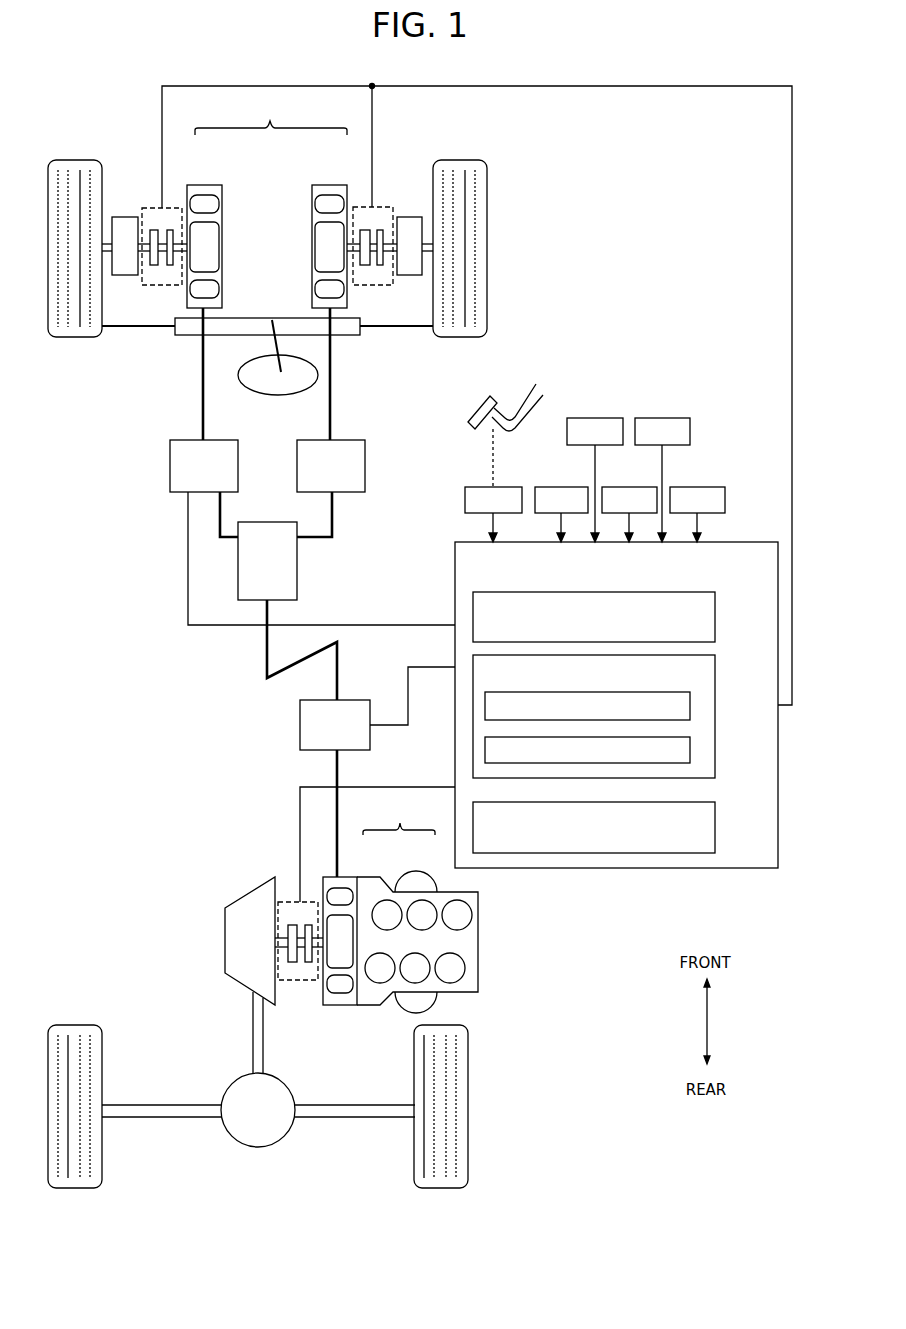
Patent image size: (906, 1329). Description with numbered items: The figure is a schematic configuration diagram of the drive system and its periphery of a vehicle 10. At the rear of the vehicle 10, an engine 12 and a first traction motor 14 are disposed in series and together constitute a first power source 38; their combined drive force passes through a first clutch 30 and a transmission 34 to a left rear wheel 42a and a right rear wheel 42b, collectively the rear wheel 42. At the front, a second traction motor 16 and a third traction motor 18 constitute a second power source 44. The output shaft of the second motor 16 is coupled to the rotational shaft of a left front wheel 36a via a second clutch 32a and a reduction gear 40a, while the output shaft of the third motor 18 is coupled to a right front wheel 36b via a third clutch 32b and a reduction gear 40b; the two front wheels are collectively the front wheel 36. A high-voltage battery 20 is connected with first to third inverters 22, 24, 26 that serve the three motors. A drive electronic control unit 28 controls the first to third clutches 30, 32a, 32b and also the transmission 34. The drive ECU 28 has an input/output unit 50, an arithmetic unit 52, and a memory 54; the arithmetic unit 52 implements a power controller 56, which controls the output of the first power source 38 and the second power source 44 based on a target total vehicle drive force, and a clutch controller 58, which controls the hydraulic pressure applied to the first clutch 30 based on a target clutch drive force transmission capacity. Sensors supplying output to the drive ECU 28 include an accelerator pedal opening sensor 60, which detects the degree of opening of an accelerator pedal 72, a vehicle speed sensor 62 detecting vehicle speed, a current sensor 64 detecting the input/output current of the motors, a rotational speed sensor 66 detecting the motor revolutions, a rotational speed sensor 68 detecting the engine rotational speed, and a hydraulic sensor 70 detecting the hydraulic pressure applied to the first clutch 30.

The vehicle 10 is at (53, 465).
The engine 12 is at (413, 893).
The first traction motor 14 is at (343, 883).
The second traction motor 16 is at (210, 185).
The third traction motor 18 is at (323, 185).
The high-voltage battery 20 is at (238, 565).
The first inverter 22 is at (300, 733).
The second inverter 24 is at (170, 453).
The third inverter 26 is at (365, 455).
The drive electronic control unit 28 is at (616, 729).
The first clutch 30 is at (303, 982).
The second clutch 32a is at (162, 286).
The third clutch 32b is at (367, 288).
The transmission 34 is at (233, 938).
The front wheel 36 is at (315, 268).
The left front wheel 36a is at (72, 340).
The right front wheel 36b is at (487, 214).
The first power source 38 is at (399, 818).
The reduction gear 40a is at (123, 225).
The reduction gear 40b is at (410, 225).
The rear wheel 42 is at (310, 1085).
The left rear wheel 42a is at (75, 1028).
The right rear wheel 42b is at (458, 1093).
The second power source 44 is at (271, 119).
The input/output unit 50 is at (715, 618).
The arithmetic unit 52 is at (715, 680).
The memory 54 is at (715, 830).
The power controller 56 is at (690, 706).
The clutch controller 58 is at (690, 750).
The accelerator pedal opening sensor 60 is at (505, 487).
The vehicle speed sensor 62 is at (562, 487).
The current sensor 64 is at (630, 487).
The rotational speed sensor 66 is at (709, 487).
The rotational speed sensor 68 is at (597, 418).
The hydraulic sensor 70 is at (666, 418).
The accelerator pedal 72 is at (522, 390).